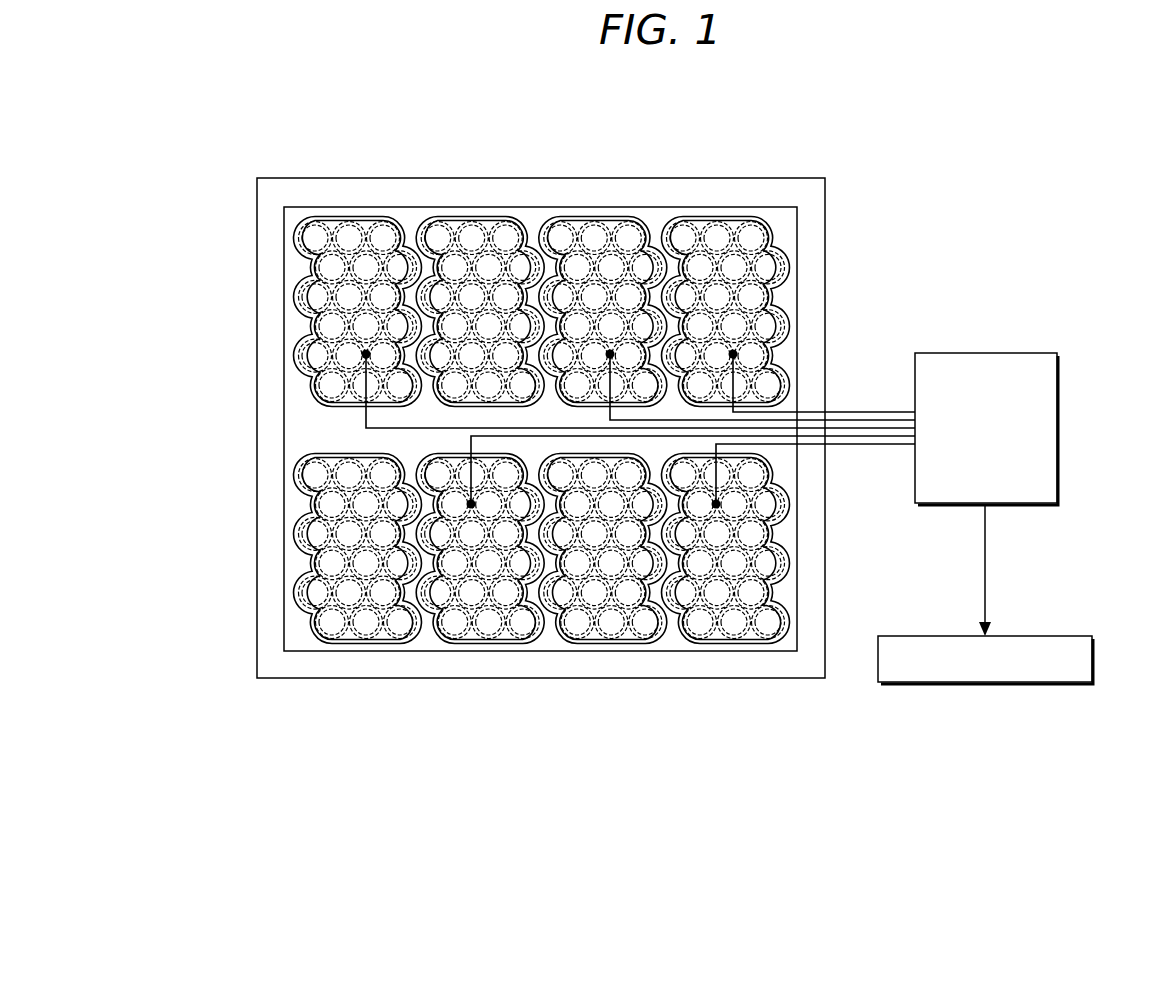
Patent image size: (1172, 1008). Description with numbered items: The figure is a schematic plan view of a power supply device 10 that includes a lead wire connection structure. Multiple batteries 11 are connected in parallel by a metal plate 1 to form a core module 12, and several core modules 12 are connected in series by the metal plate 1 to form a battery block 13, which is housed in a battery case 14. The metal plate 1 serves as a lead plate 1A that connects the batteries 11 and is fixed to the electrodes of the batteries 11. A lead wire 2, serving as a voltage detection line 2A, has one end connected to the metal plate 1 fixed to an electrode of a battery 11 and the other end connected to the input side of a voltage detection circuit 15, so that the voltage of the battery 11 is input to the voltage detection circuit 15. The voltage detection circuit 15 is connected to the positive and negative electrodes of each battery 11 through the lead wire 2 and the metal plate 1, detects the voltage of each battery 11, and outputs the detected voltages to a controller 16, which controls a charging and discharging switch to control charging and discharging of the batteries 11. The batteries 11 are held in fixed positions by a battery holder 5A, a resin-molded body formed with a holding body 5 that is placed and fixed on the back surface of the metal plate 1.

The metal plate 1 is at (475, 374).
The lead plate 1A is at (347, 224).
The lead wire 2 is at (534, 422).
The voltage detection line 2A is at (362, 428).
The holding body 5 is at (475, 387).
The battery holder 5A is at (412, 223).
The power supply device 10 is at (928, 158).
The battery 11 is at (284, 243).
The core module 12 is at (328, 215).
The battery block 13 is at (327, 765).
The battery case 14 is at (268, 300).
The voltage detection circuit 15 is at (1058, 432).
The controller 16 is at (984, 683).